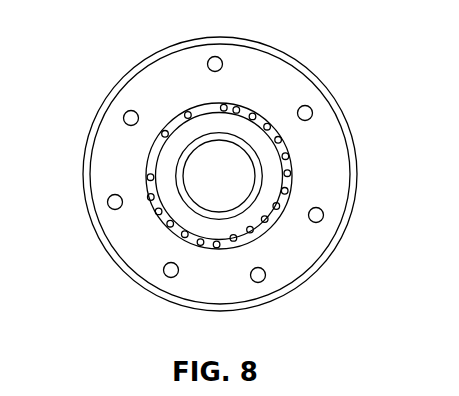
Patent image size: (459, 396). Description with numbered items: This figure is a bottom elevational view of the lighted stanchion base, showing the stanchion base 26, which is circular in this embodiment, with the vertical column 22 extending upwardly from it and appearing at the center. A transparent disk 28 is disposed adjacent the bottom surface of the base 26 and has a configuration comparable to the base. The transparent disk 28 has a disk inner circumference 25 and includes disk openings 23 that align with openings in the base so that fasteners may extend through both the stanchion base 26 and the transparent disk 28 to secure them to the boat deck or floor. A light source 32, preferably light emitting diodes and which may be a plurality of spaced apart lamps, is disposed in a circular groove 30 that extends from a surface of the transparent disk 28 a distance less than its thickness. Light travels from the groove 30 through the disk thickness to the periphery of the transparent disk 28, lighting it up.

The vertical column 22 is at (183, 183).
The disk openings 23 is at (223, 67).
The disk inner circumference 25 is at (180, 195).
The stanchion base 26 is at (165, 75).
The transparent disk 28 is at (310, 74).
The circular groove 30 is at (155, 152).
The light source 32 is at (147, 177).